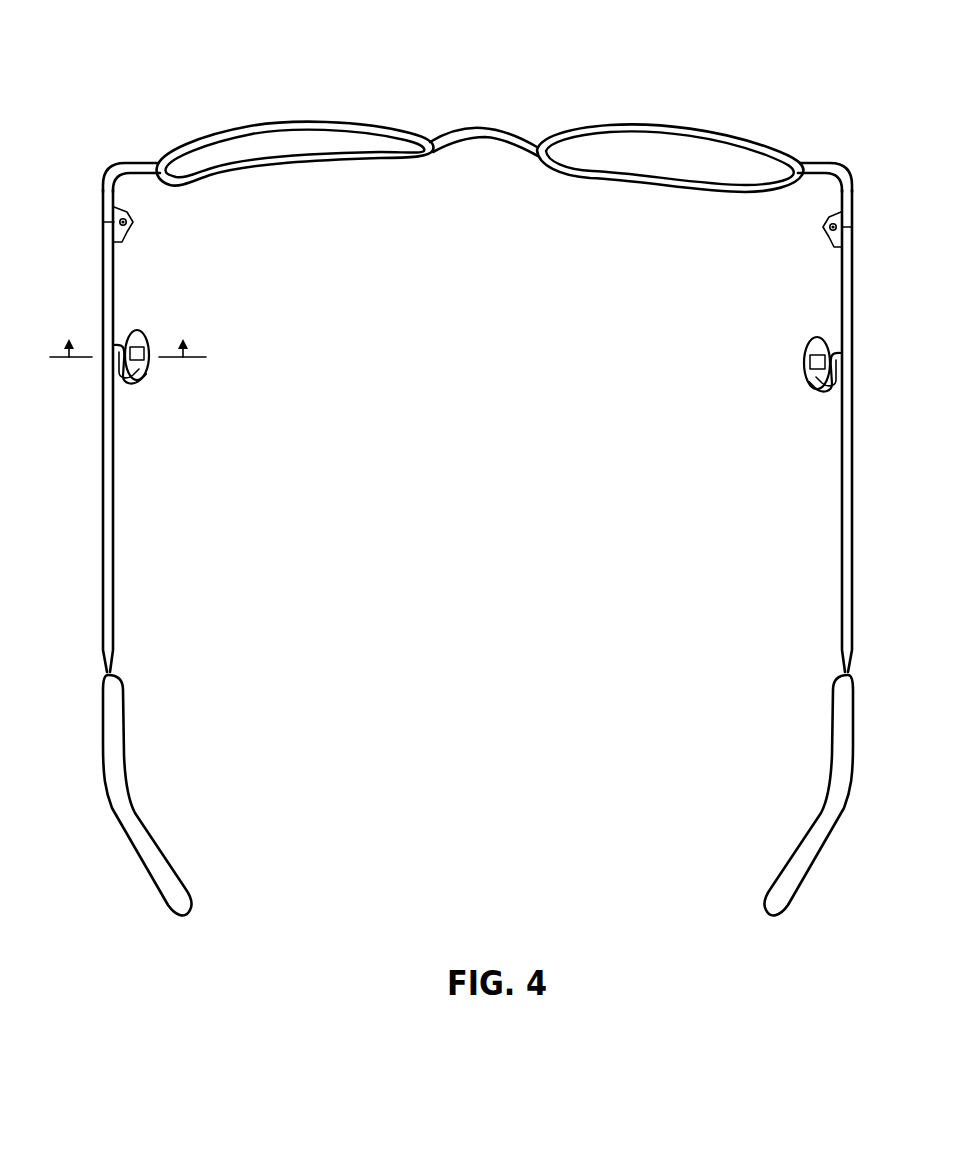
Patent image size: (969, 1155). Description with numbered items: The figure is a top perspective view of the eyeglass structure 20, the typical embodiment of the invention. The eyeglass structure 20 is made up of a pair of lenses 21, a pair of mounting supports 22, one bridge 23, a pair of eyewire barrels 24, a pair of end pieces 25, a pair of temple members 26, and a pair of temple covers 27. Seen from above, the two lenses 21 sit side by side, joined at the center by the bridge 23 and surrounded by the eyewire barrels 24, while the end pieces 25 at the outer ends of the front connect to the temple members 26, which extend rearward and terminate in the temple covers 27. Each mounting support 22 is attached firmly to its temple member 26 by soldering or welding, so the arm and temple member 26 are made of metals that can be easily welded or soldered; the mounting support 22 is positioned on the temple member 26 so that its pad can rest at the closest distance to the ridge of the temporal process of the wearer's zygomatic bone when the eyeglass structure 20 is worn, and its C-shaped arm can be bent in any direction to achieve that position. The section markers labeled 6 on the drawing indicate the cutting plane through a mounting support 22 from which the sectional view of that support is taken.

The eyeglass structure 20 is at (493, 63).
The lenses 21 is at (305, 147).
The mounting support 22 is at (140, 378).
The bridge 23 is at (483, 134).
The eyewire barrels 24 is at (305, 122).
The end pieces 25 is at (132, 161).
The temple member 26 is at (110, 572).
The temple covers 27 is at (120, 805).
The section line 6- 6 is at (128, 339).